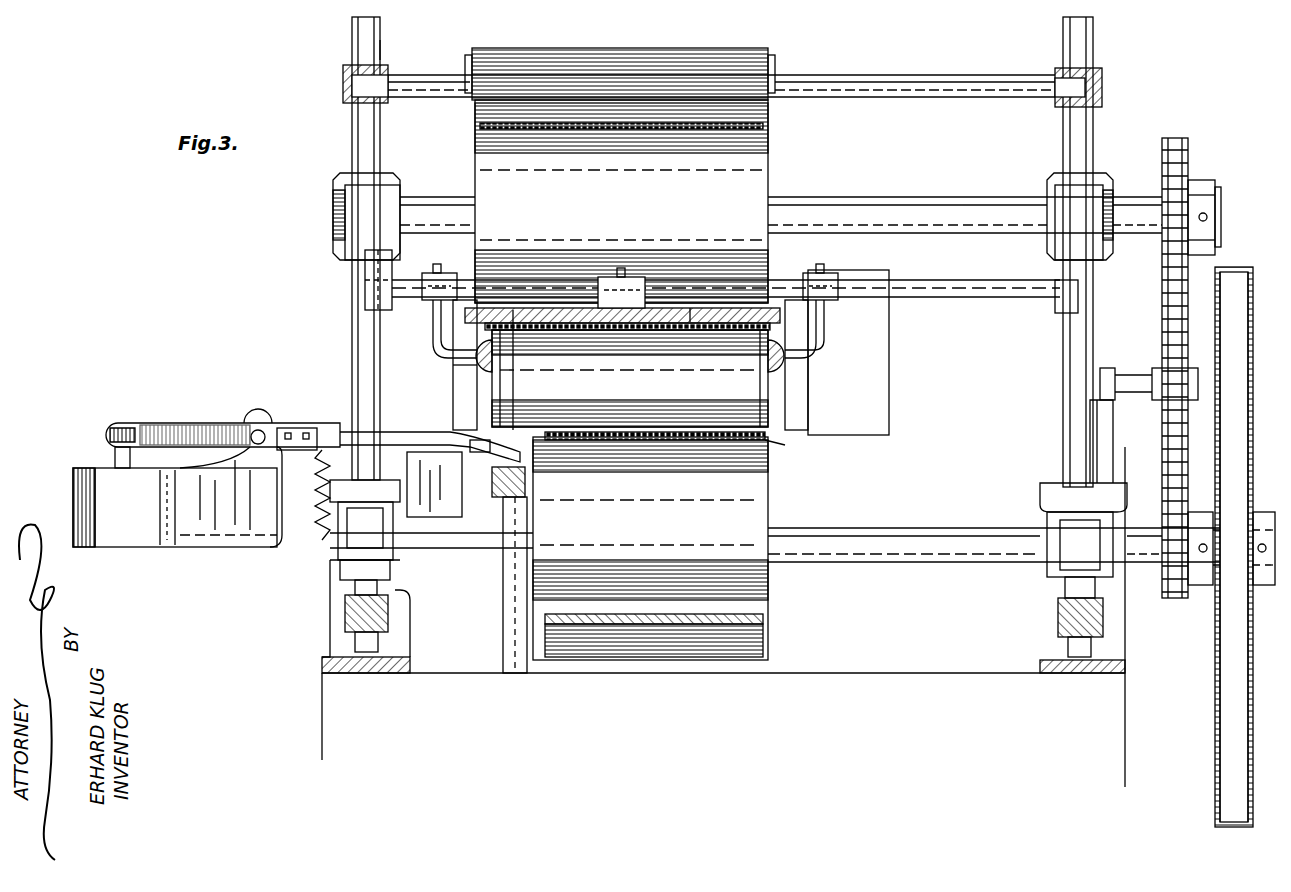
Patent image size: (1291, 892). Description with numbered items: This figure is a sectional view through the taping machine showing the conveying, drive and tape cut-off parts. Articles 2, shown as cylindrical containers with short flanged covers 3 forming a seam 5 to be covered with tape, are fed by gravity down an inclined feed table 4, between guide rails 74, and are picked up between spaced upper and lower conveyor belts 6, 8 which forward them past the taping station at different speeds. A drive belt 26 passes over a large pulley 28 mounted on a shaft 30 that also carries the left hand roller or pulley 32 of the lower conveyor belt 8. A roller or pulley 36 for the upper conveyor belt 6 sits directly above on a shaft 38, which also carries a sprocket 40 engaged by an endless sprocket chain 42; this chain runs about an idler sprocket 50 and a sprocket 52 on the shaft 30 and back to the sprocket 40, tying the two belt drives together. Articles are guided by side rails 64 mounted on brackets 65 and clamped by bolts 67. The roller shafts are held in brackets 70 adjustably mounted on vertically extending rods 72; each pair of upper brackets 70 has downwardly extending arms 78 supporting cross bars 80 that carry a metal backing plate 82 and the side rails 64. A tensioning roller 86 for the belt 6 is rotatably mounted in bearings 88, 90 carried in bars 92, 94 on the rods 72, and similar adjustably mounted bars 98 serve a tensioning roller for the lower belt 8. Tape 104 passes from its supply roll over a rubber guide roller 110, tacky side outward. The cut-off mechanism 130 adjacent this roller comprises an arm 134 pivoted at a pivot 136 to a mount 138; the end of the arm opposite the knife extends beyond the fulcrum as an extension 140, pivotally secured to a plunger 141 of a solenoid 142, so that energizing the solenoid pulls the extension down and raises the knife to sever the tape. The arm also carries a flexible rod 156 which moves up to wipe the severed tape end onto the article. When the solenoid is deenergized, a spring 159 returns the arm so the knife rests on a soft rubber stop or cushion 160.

The articles 2 is at (630, 378).
The flanged covers 3 is at (505, 320).
The inclined feed table 4 is at (870, 435).
The seam 5 is at (515, 372).
The upper conveyor belt 6 is at (690, 315).
The lower conveyor belt 8 is at (768, 442).
The drive belt 26 is at (1230, 668).
The large pulley 28 is at (1215, 654).
The shaft 30 is at (935, 528).
The left hand roller or pulley 32 is at (650, 546).
The roller or pulley 36 is at (621, 201).
The shaft 38 is at (890, 186).
The sprocket 40 is at (1200, 180).
The endless sprocket chain 42 is at (1162, 302).
The idler sprocket 50 is at (1158, 368).
The sprocket 52 is at (1175, 598).
The side rails 64 is at (477, 358).
The brackets 65 is at (433, 322).
The bolts 67 is at (437, 264).
The brackets 70 is at (398, 190).
The vertically extending rods 72 is at (380, 146).
The guide rails 74 is at (453, 395).
The downwardly extending arms 78 is at (365, 298).
The cross bars 80 is at (945, 268).
The metal backing plate 82 is at (650, 315).
The tensioning roller 86 is at (597, 48).
The bearing 88 is at (1080, 70).
The bearing 90 is at (380, 50).
The bar 92 is at (1102, 88).
The bar 94 is at (343, 72).
The adjustably mounted bars 98 is at (388, 612).
The tape 104 is at (503, 638).
The rubber guide roller 110 is at (490, 440).
The lever assembly 130 is at (195, 439).
The arm 134 is at (330, 428).
The pivot 136 is at (260, 430).
The mount 138 is at (177, 497).
The extension 140 is at (198, 423).
The plunger 141 is at (115, 452).
The solenoid 142 is at (73, 478).
The flexible rod 156 is at (415, 430).
The spring 159 is at (318, 488).
The stop or cushion 160 is at (525, 495).